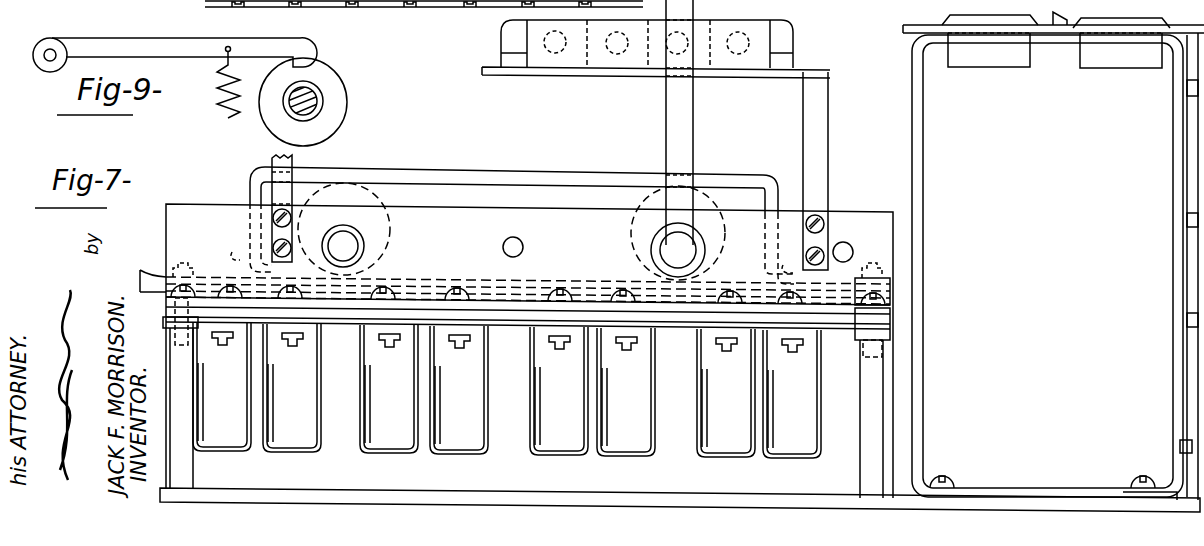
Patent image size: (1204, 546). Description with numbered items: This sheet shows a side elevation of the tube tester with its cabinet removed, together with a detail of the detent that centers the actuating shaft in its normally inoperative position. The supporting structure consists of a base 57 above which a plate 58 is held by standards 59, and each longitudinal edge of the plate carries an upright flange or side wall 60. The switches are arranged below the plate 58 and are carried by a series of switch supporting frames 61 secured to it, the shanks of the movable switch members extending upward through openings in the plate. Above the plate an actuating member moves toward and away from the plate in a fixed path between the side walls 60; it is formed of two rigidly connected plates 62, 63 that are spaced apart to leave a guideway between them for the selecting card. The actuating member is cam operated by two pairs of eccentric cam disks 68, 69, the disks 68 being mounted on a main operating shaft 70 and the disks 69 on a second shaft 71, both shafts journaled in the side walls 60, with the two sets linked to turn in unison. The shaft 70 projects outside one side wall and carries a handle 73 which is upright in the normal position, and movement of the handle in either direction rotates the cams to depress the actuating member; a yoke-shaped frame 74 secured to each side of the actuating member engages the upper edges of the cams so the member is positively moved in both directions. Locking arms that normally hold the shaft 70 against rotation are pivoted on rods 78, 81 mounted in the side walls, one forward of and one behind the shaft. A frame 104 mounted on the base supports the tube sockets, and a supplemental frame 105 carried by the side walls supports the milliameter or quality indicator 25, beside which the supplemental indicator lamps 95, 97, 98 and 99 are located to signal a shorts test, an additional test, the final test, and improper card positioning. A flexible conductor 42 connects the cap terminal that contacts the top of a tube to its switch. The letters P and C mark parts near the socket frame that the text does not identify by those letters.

In FIG. 7, the quality indicator 25 is at (656, 49).
In FIG. 7, the conductor 42 is at (1063, 17).
In FIG. 7, the base 57 is at (527, 493).
In FIG. 7, the plate 58 is at (490, 315).
In FIG. 7, the standards 59 is at (182, 469).
In FIG. 7, the side wall 60 is at (516, 351).
In FIG. 7, the switch supporting frame 61 is at (360, 346).
In FIG. 7, the plate of actuating member 62 is at (428, 290).
In FIG. 7, the upper plate of actuating member 63 is at (575, 282).
In FIG. 7, the eccentric cam disks 68 is at (648, 203).
In FIG. 7, the eccentric cam disks 69 is at (344, 229).
In FIG. 9, the main operating shaft 70 is at (323, 103).
In FIG. 7, the main operating shaft 70 is at (678, 250).
In FIG. 7, the shaft 71 is at (318, 211).
In FIG. 7, the handle 73 is at (683, 136).
In FIG. 7, the yoke-shaped frame 74 is at (507, 178).
In FIG. 7, the rod 78 is at (524, 247).
In FIG. 7, the rod 81 is at (853, 251).
In FIG. 7, the lamp 95 is at (556, 52).
In FIG. 7, the lamp 97 is at (740, 32).
In FIG. 7, the lamp 98 is at (677, 31).
In FIG. 7, the lamp 99 is at (610, 53).
In FIG. 7, the frame 104 is at (1053, 250).
In FIG. 7, the supplemental frame 105 is at (822, 136).
In FIG. 7, the plate P is at (990, 15).
In FIG. 7, the cover C is at (1123, 17).